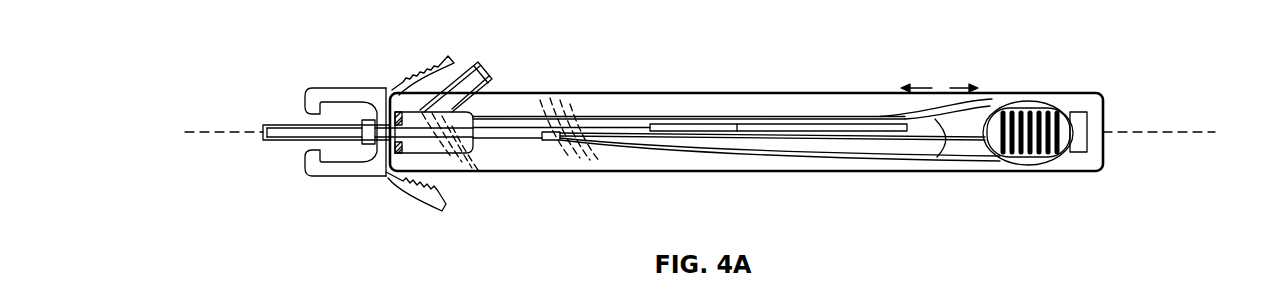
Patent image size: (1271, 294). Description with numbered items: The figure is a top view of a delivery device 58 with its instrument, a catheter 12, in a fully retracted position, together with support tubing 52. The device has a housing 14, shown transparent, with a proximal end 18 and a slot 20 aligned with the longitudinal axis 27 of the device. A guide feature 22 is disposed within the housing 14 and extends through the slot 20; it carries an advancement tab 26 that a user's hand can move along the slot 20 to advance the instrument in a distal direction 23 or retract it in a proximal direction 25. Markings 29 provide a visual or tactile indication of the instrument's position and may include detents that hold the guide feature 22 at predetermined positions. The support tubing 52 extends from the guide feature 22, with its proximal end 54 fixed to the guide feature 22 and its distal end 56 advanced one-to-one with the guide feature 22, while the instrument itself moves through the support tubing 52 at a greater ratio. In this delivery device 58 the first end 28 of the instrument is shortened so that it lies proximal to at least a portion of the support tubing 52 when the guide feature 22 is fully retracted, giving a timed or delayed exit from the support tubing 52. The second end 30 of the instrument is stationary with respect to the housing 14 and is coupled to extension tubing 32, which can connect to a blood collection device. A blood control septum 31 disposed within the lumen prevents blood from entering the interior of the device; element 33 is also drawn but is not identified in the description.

The catheter 12 is at (768, 114).
The housing 14 is at (525, 172).
The proximal end 18 is at (1072, 79).
The slot 20 is at (843, 124).
The guide feature 22 is at (980, 122).
The distal direction 23 is at (918, 87).
The proximal direction 25 is at (958, 87).
The advancement tab 26 is at (1066, 138).
The longitudinal axis 27 is at (203, 133).
The first end 28 is at (270, 141).
The markings 29 is at (906, 128).
The second end 30 is at (455, 108).
The blood control septum 31 is at (402, 144).
The extension tubing 32 is at (503, 86).
The lower wing lever 33 is at (416, 191).
The support tubing 52 is at (628, 148).
The proximal end 54 is at (990, 169).
The distal end 56 is at (270, 124).
The delivery device 58 is at (642, 84).